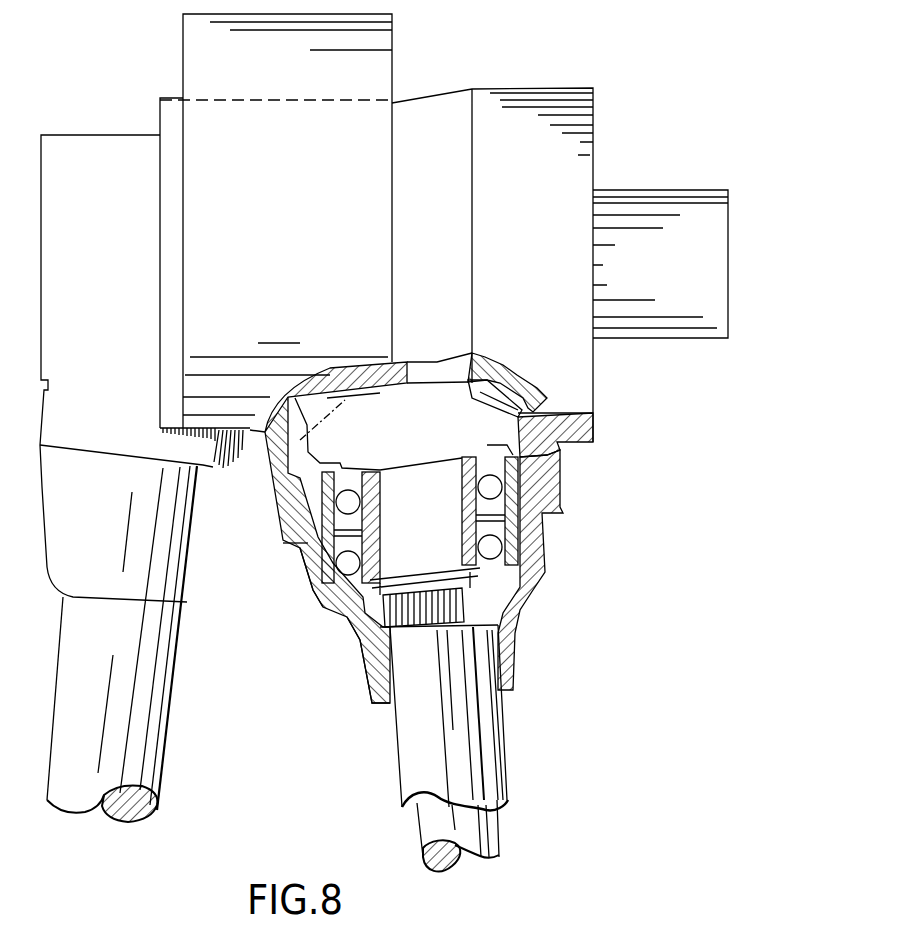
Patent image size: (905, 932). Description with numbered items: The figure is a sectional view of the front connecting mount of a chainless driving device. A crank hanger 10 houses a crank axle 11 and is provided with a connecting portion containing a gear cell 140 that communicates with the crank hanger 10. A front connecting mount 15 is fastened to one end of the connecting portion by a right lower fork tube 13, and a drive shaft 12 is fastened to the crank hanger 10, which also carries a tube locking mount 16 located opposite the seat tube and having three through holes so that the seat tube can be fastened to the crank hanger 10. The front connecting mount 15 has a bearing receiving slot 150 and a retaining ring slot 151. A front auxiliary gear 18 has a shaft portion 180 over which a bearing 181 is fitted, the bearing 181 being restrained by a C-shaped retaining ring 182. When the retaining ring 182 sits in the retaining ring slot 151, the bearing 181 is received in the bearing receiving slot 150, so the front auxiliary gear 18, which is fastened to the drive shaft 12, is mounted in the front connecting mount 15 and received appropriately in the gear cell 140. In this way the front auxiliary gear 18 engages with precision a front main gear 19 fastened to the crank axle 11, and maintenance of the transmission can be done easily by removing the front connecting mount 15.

The crank hanger 10 is at (593, 136).
The crank axle 11 is at (688, 212).
The drive shaft 12 is at (493, 833).
The right lower fork tube 13 is at (490, 768).
The front connecting mount 15 is at (503, 625).
The tube locking mount 16 is at (378, 72).
The front auxiliary gear 18 is at (493, 433).
The front main gear 19 is at (540, 394).
The gear cell 140 is at (283, 537).
The bearing receiving slot 150 is at (510, 555).
The retaining ring slot 151 is at (495, 592).
The shaft portion 180 is at (450, 527).
The bearing 181 is at (320, 605).
The C-shaped retaining ring 182 is at (347, 653).